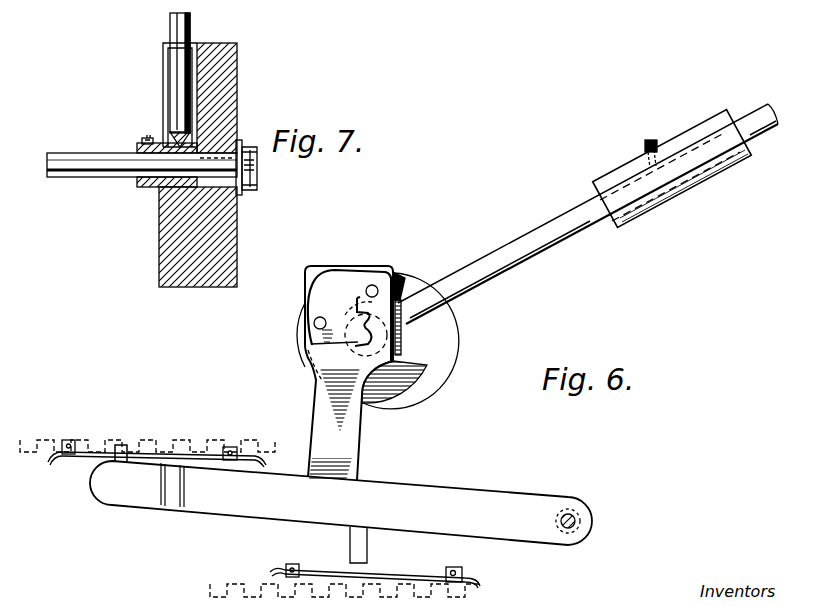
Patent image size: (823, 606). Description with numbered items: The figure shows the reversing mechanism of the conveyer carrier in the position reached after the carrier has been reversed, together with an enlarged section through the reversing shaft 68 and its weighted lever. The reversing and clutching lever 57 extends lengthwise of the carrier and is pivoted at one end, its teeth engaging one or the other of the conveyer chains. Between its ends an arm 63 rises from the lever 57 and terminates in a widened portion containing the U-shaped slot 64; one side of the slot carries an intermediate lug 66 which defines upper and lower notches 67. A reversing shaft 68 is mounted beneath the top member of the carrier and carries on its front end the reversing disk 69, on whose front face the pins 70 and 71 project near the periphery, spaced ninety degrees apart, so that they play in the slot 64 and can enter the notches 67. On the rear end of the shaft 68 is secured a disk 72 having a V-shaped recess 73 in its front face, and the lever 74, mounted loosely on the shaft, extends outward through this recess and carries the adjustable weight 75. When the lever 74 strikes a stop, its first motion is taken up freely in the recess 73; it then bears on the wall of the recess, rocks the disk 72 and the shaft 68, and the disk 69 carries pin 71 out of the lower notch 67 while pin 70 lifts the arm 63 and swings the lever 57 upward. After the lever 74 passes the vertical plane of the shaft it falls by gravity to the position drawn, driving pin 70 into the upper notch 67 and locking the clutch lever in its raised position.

In FIG. 6, the reversing and clutching lever 57 is at (467, 497).
In FIG. 6, the arm 63 is at (316, 424).
In FIG. 6, the slot 64 is at (322, 265).
In FIG. 6, the lug 66 is at (360, 308).
In FIG. 6, the notches 67 is at (360, 288).
In FIG. 7, the reversing shaft 68 is at (93, 157).
In FIG. 6, the reversing disk 69 is at (403, 352).
In FIG. 6, the pin 70 is at (376, 287).
In FIG. 6, the pin 71 is at (315, 326).
In FIG. 7, the disk 72 is at (177, 272).
In FIG. 6, the disk 72 is at (424, 333).
In FIG. 7, the V-shaped recess 73 is at (163, 62).
In FIG. 6, the V-shaped recess 73 is at (412, 295).
In FIG. 7, the lever 74 is at (190, 25).
In FIG. 6, the lever 74 is at (532, 256).
In FIG. 6, the adjustable weight 75 is at (640, 220).